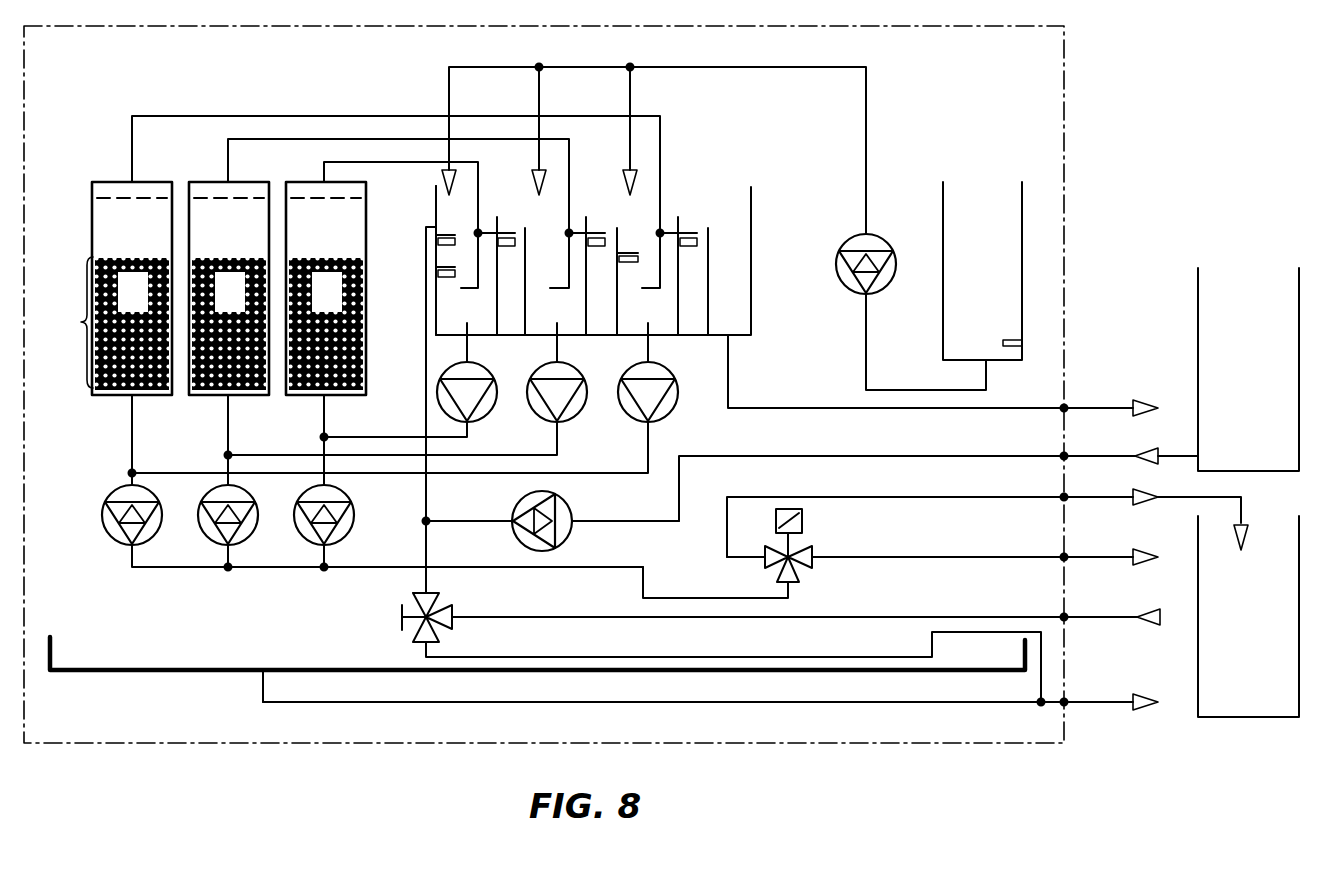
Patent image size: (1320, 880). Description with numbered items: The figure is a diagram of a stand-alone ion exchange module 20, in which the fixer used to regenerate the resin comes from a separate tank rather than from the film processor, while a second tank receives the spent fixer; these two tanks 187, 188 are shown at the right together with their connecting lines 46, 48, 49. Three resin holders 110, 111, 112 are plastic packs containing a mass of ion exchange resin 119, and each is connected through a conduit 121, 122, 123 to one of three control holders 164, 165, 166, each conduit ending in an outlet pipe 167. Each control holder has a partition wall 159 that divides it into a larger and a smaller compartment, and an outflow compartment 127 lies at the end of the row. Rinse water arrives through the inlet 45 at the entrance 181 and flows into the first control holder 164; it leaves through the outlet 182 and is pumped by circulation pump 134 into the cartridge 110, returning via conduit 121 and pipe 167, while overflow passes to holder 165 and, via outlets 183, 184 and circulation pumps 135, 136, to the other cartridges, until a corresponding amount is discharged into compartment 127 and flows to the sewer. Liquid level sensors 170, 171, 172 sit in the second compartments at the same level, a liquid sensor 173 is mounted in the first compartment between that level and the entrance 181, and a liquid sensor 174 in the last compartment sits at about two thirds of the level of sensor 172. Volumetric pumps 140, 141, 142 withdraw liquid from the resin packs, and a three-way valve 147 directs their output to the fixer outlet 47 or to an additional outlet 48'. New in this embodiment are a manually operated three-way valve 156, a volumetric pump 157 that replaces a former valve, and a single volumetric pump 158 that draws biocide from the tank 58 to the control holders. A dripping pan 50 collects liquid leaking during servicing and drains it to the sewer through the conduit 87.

The module 20 is at (392, 28).
The conduit 123 is at (188, 115).
The conduit 122 is at (300, 138).
The conduit 121 is at (378, 162).
The resin holder 112 is at (113, 179).
The resin holder 111 is at (208, 179).
The resin holder 110 is at (303, 179).
The ion exchange resin 119 is at (62, 322).
The control holder 164 is at (495, 175).
The control holder 165 is at (587, 176).
The control holder 166 is at (686, 178).
The outflow compartment 127 is at (733, 222).
The outlet pipe 167 is at (455, 190).
The entrance 181 is at (437, 237).
The liquid sensor 173 is at (443, 270).
The liquid level sensor 170 is at (513, 232).
The liquid level sensor 171 is at (603, 232).
The liquid level sensor 172 is at (697, 233).
The liquid sensor 174 is at (640, 258).
The partition wall 159 is at (497, 297).
The outlet 182 is at (470, 337).
The outlet 183 is at (565, 337).
The outlet 184 is at (655, 337).
The circulation pump 134 is at (485, 407).
The circulation pump 135 is at (574, 408).
The circulation pump 136 is at (668, 402).
The volumetric pump 158 is at (843, 243).
The tank 58 is at (943, 190).
The outlet line 48 is at (945, 375).
The return line from tank 187 46 is at (1147, 455).
The fixer outlet 47 is at (1150, 496).
The additional outlet 48' is at (995, 541).
The inlet 45 is at (1145, 613).
The outlet line 49 is at (1143, 699).
The conduit 87 is at (620, 701).
The tank 187 is at (1276, 443).
The tank 188 is at (1281, 687).
The volumetric pump 157 is at (563, 532).
The three-way valve 147 is at (807, 552).
The three-way valve 156 is at (442, 609).
The volumetric pump 142 is at (120, 535).
The volumetric pump 141 is at (215, 535).
The volumetric pump 140 is at (320, 535).
The dripping pan 50 is at (185, 673).